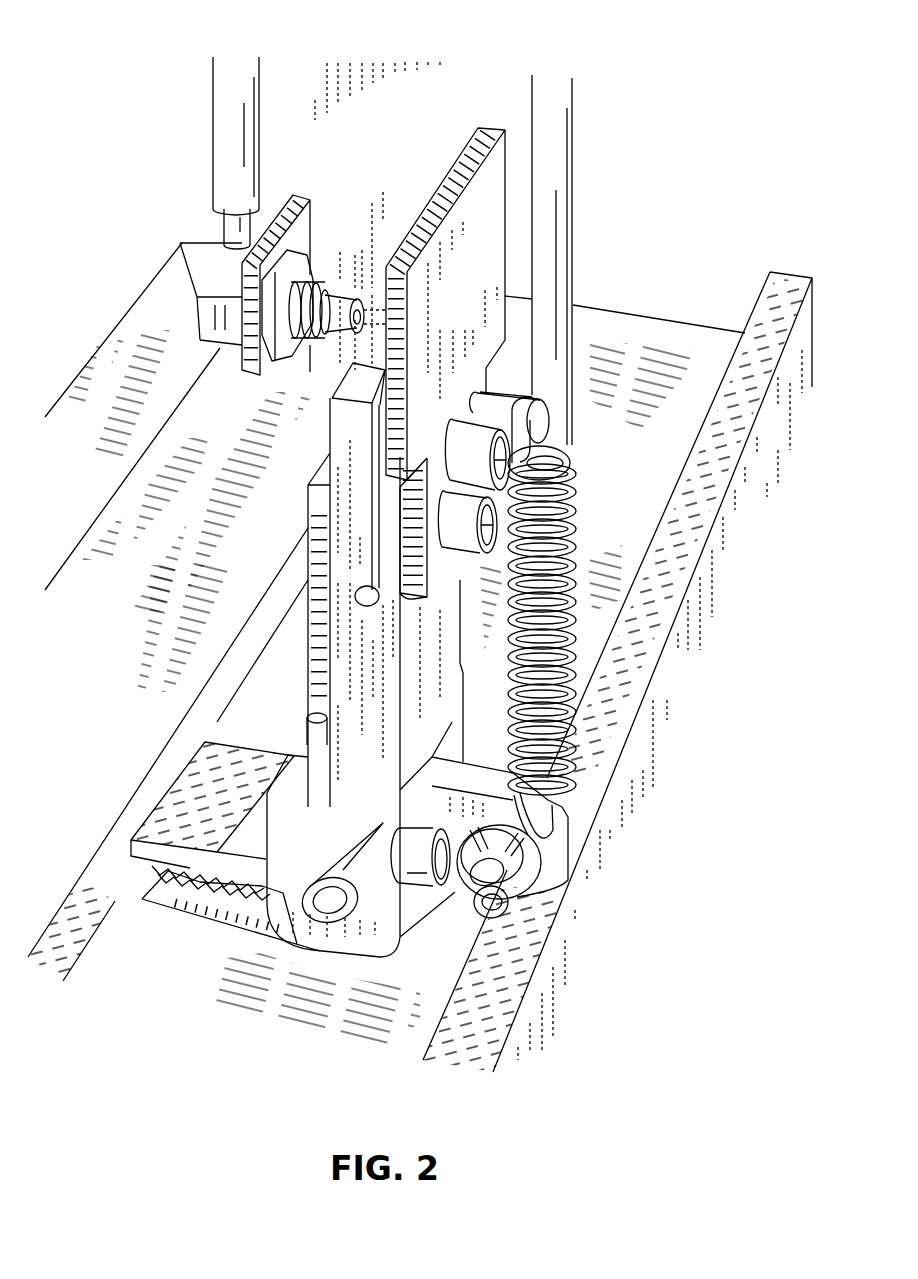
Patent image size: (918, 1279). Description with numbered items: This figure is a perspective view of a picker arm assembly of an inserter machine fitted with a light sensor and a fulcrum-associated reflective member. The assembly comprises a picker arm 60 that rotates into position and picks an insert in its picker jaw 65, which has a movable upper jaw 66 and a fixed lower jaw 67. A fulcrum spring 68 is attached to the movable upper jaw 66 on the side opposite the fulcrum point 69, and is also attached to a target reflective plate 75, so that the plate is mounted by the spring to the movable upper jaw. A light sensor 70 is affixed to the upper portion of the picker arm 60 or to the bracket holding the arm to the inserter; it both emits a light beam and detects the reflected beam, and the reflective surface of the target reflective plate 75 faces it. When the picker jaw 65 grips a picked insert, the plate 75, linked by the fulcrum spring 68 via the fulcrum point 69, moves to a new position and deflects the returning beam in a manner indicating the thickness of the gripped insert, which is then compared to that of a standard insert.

The picker arm 60 is at (350, 655).
The picker jaw 65 is at (165, 876).
The movable upper jaw 66 is at (178, 782).
The fixed lower jaw 67 is at (210, 913).
The fulcrum spring 68 is at (577, 513).
The fulcrum point 69 is at (503, 817).
The light sensor 70 is at (337, 345).
The target reflective plate 75 is at (475, 238).